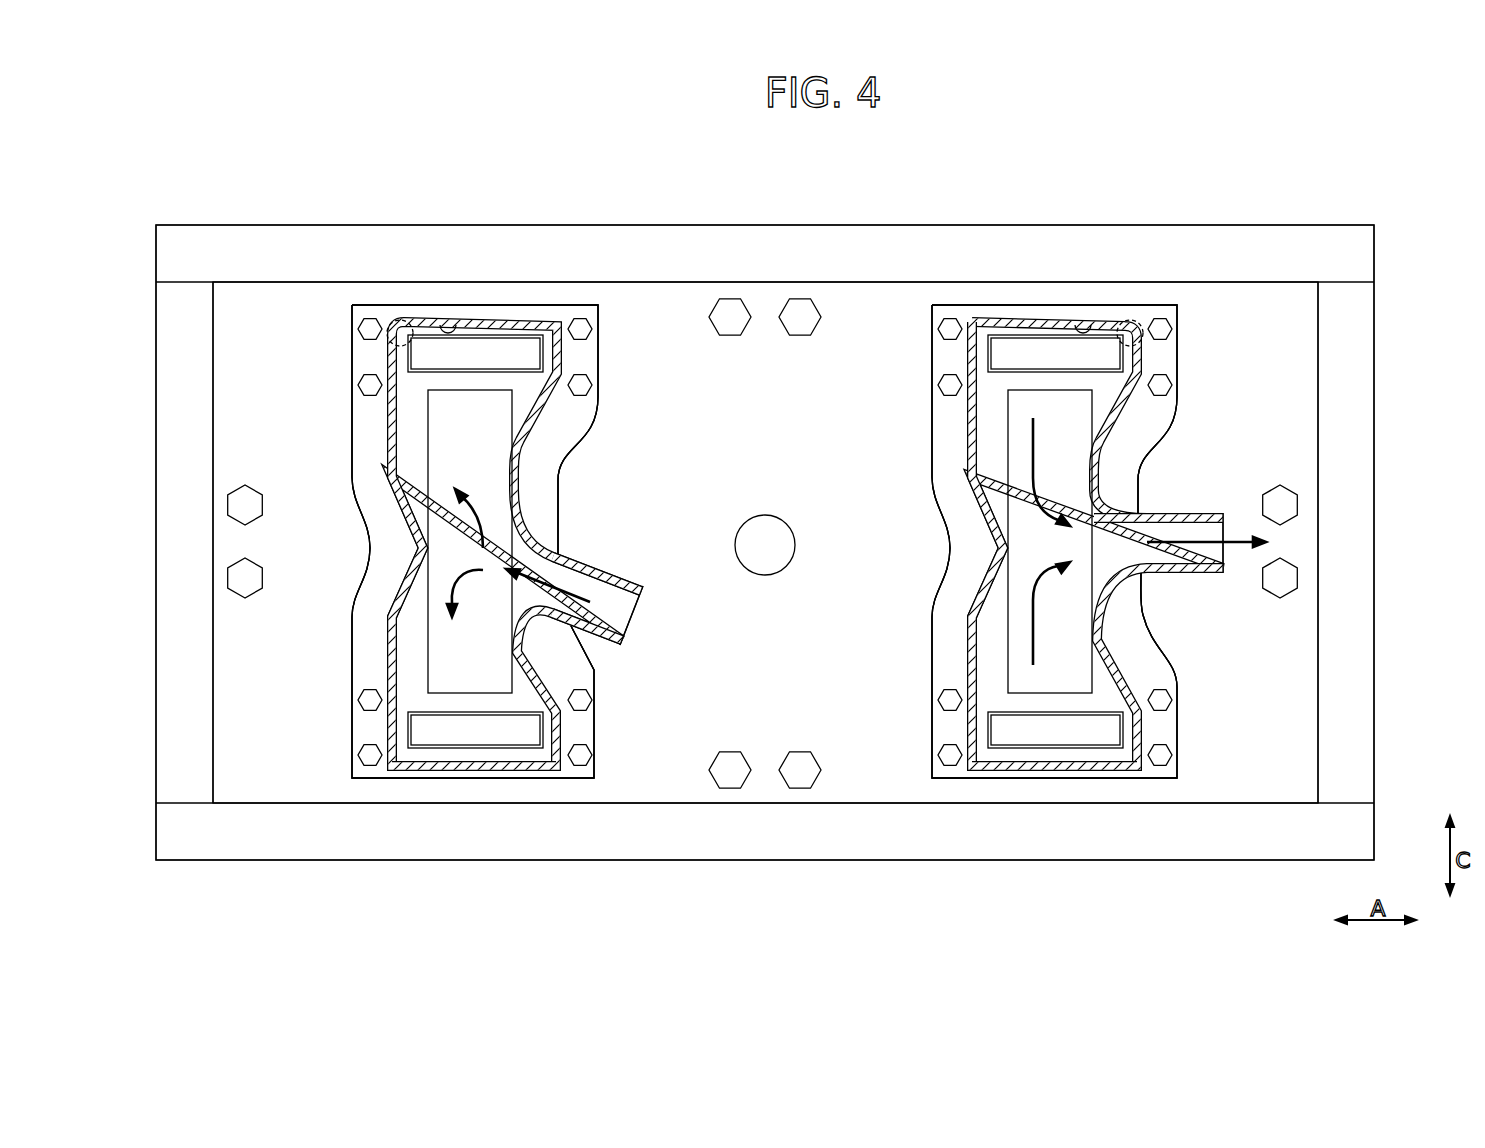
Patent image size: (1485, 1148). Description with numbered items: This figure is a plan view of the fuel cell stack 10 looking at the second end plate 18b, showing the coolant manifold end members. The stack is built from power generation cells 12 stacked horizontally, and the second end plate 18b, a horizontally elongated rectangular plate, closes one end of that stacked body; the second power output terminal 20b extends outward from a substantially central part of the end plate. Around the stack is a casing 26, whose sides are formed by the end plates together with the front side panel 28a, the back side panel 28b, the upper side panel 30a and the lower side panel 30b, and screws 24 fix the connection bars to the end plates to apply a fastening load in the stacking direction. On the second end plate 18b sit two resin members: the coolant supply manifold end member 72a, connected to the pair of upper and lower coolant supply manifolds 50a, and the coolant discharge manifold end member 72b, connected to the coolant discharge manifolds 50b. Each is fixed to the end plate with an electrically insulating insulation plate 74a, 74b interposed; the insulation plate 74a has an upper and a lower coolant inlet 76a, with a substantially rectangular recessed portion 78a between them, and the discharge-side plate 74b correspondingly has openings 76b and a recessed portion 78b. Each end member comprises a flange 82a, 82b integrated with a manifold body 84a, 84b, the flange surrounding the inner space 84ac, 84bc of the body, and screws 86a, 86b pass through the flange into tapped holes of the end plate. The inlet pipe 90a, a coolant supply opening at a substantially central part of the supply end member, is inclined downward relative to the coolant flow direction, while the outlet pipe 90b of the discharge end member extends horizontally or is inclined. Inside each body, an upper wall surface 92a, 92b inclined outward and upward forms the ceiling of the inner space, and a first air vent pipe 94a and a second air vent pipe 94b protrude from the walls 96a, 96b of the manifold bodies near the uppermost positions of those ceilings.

The fuel cell stack 10 is at (455, 191).
The power generation cell 12 is at (765, 305).
The second end plate 18b is at (1222, 302).
The second power output terminal 20b is at (782, 562).
The screw 24 is at (727, 330).
The casing 26 is at (1348, 218).
The front side panel 28a is at (1372, 547).
The back side panel 28b is at (158, 598).
The upper side panel 30a is at (277, 240).
The lower side panel 30b is at (728, 848).
The coolant supply manifold 50a is at (500, 355).
The coolant discharge manifold 50b is at (1030, 355).
The coolant supply manifold end member 72a is at (352, 358).
The coolant discharge manifold end member 72b is at (1178, 358).
The insulation plate 74a is at (352, 425).
The insulation plate 74b is at (932, 470).
The coolant inlet 76a is at (475, 376).
The coolant outlet 76b is at (1056, 376).
The recessed portion 78a is at (440, 500).
The recessed portion 78b is at (1020, 612).
The flange 82a is at (590, 737).
The flange 82b is at (1172, 737).
The manifold body 84a is at (545, 427).
The inner space 84ac is at (418, 655).
The manifold body 84b is at (1122, 413).
The inner space 84bc is at (998, 640).
The screw 86a is at (361, 329).
The screw 86b is at (947, 388).
The inlet pipe 90a is at (633, 582).
The outlet pipe 90b is at (1201, 571).
The upper wall surface 92a is at (446, 322).
The upper wall surface 92b is at (1085, 322).
The first air vent pipe 94a is at (401, 318).
The second air vent pipe 94b is at (1132, 318).
The wall 96a is at (506, 766).
The wall 96b is at (1084, 766).